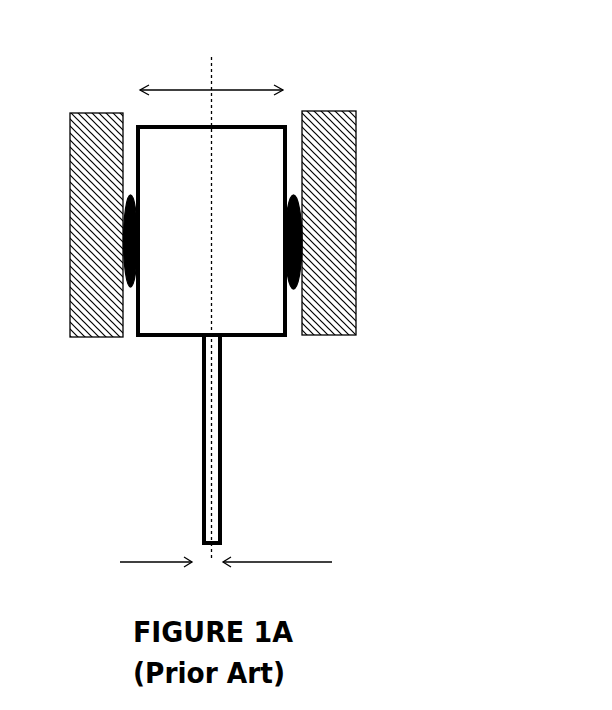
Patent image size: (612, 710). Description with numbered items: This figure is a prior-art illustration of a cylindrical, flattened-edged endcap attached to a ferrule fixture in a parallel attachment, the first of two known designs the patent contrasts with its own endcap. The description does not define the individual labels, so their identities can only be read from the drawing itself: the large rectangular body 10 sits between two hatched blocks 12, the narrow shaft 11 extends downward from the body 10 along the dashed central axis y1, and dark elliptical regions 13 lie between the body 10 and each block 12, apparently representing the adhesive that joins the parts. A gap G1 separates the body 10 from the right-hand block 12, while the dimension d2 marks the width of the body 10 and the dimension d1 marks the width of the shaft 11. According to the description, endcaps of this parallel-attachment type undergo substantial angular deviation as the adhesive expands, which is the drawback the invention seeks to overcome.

The magnet body 10 is at (168, 337).
The stem / shaft 11 is at (222, 510).
The pole pieces / yoke blocks 12 is at (356, 145).
The magnetic fluid seals 13 is at (293, 290).
The gap G1 is at (296, 148).
The central axis y1 is at (213, 296).
The stem diameter d1 is at (226, 562).
The body width d2 is at (211, 79).